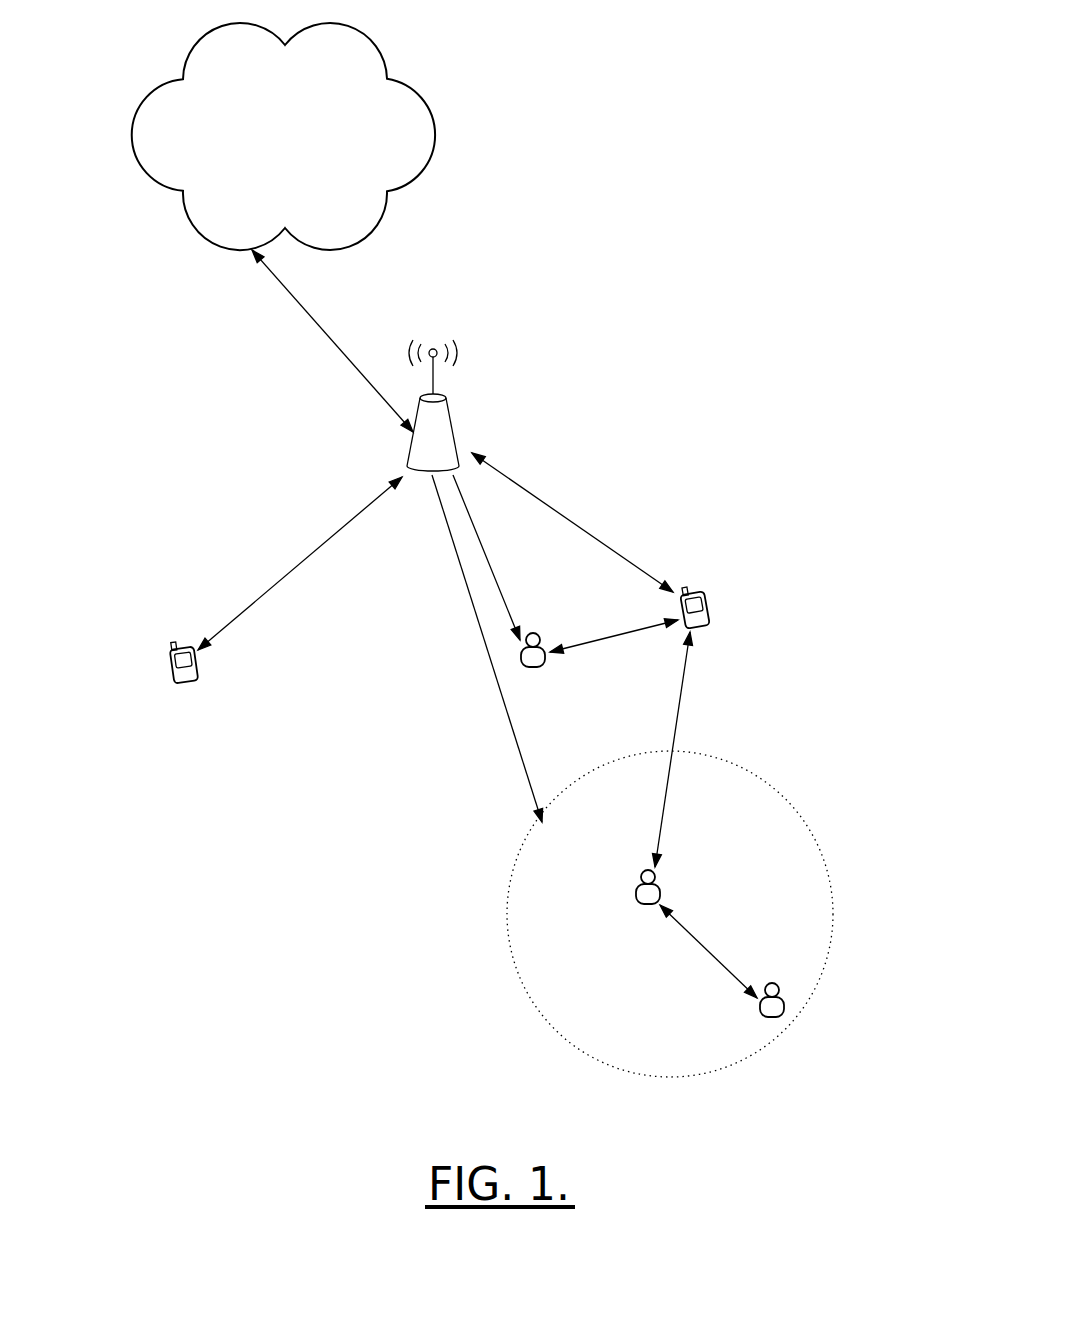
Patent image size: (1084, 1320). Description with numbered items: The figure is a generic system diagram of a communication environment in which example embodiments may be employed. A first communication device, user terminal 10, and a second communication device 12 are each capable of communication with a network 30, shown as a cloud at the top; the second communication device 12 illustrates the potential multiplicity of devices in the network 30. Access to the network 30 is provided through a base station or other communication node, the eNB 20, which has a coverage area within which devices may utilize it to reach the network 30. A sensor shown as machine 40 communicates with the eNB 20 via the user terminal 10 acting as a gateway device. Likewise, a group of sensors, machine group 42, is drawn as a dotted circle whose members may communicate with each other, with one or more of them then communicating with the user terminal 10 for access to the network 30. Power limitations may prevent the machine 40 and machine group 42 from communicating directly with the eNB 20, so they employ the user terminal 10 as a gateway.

The network 30 is at (310, 136).
The eNB 20 is at (418, 455).
The second communication device 12 is at (211, 689).
The user terminal 10 is at (722, 633).
The machine 40 is at (561, 670).
The machine group 42 is at (686, 914).